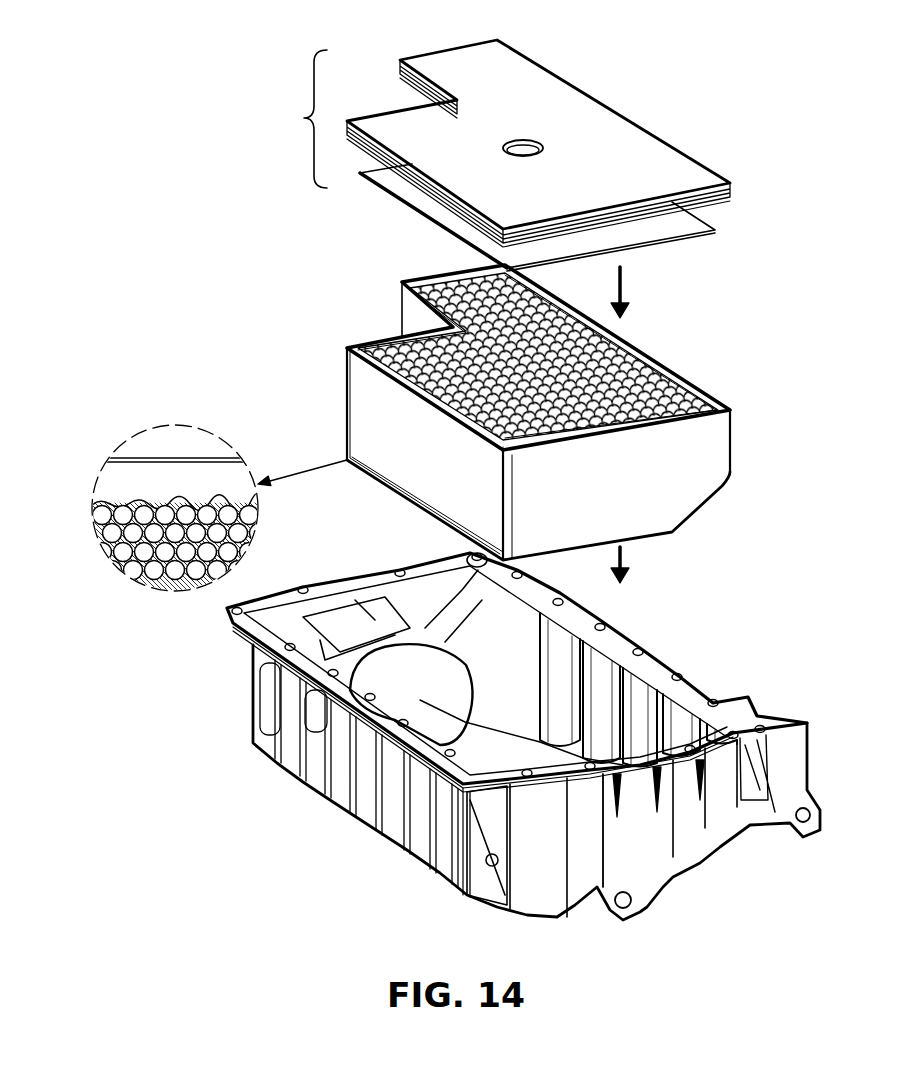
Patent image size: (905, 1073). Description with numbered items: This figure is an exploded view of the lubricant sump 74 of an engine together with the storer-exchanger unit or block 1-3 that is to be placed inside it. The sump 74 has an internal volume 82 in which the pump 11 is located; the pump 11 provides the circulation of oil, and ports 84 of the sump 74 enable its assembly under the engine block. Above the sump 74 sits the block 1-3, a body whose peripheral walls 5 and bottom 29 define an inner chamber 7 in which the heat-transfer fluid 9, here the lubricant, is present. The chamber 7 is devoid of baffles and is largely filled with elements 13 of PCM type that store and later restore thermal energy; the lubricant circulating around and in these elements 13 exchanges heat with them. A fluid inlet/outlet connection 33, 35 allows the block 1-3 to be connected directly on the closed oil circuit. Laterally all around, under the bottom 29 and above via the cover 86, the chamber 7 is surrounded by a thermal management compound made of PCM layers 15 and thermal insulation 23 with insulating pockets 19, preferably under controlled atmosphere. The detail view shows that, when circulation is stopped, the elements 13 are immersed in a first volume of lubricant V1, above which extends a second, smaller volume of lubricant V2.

The storer-exchanger unit/block 1-3 is at (747, 516).
The peripheral wall 5 is at (370, 420).
The inner volume (chamber) 7 is at (590, 343).
The heat-transfer fluid 9 is at (398, 264).
The pump 11 is at (340, 630).
The thermal energy storage elements 13 is at (617, 387).
The PCM layer 15 is at (687, 243).
The insulating pockets 19 is at (644, 110).
The thermally insulating material 23 is at (723, 202).
The bottom 29 is at (408, 473).
The fluid inlet connection 33 is at (447, 270).
The fluid outlet connection 35 is at (387, 333).
The sump 74 is at (243, 706).
The internal volume of the sump 82 is at (593, 710).
The ports 84 is at (680, 677).
The cover 86 is at (299, 119).
The first volume of lubricant V1 is at (123, 563).
The second volume of lubricant V2 is at (130, 483).